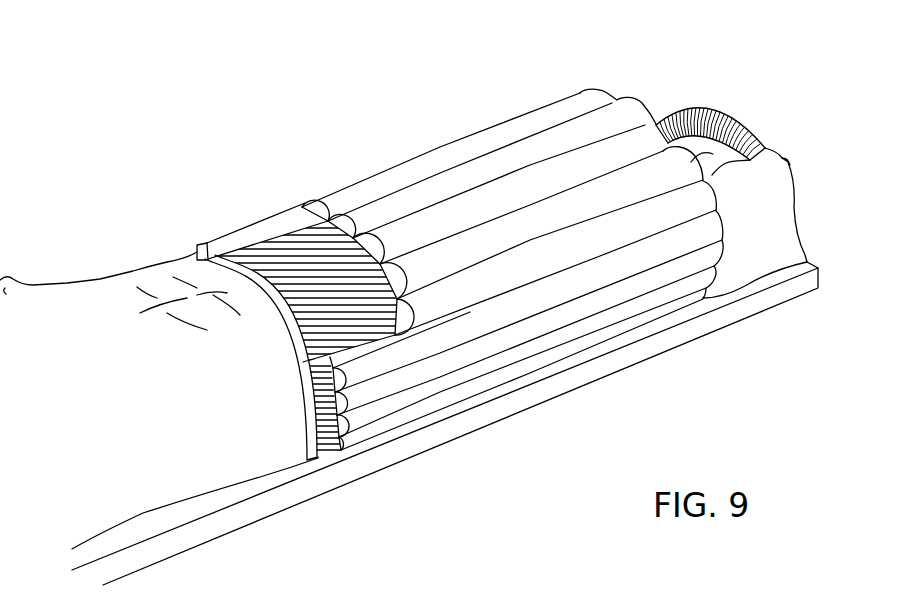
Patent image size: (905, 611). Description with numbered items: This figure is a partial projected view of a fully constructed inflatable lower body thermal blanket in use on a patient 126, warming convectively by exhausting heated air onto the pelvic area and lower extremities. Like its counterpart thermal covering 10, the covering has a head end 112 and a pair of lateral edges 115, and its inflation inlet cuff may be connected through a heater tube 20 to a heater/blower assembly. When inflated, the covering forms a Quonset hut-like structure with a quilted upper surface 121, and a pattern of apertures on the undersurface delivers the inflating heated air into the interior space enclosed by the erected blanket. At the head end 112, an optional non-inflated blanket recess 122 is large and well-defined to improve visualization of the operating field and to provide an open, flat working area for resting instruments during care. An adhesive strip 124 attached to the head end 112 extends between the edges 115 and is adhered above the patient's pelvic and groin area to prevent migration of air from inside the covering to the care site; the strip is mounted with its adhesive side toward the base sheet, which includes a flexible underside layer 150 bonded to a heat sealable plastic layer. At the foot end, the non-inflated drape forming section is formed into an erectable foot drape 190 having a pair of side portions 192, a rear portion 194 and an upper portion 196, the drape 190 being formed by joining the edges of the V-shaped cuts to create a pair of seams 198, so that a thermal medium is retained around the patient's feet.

The thermal covering 10 is at (383, 143).
The heater tube 20 is at (733, 112).
The head end 112 is at (323, 452).
The lateral edges 115 is at (530, 373).
The quilted upper surface 121 is at (633, 290).
The non-inflated blanket recess 122 is at (258, 233).
The adhesive strip 124 is at (306, 352).
The patient 126 is at (243, 473).
The underside layer 150 is at (310, 410).
The erectable foot drape 190 is at (762, 100).
The side portions 192 is at (652, 103).
The rear portion 194 is at (773, 160).
The upper portion 196 is at (691, 163).
The seams 198 is at (788, 200).